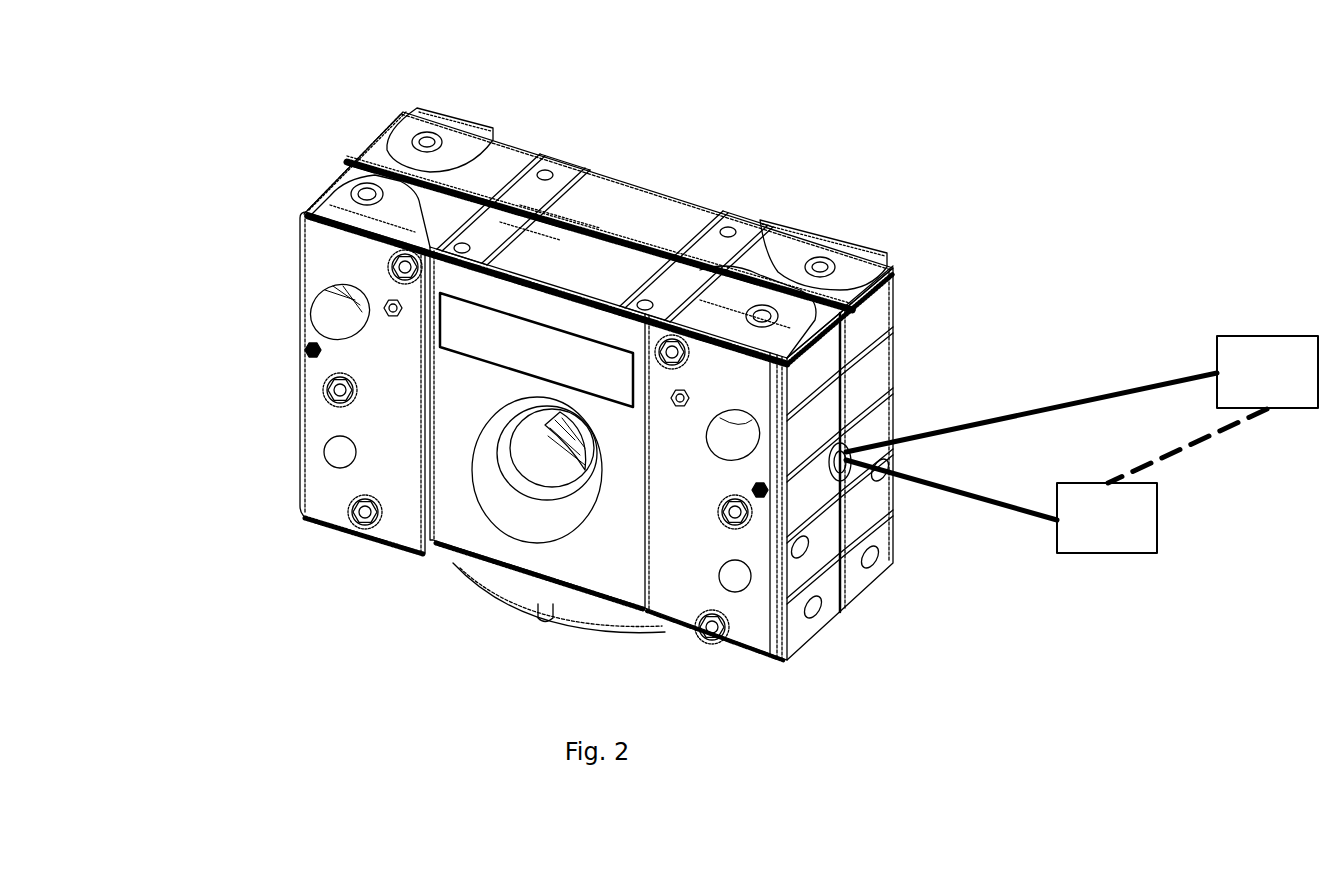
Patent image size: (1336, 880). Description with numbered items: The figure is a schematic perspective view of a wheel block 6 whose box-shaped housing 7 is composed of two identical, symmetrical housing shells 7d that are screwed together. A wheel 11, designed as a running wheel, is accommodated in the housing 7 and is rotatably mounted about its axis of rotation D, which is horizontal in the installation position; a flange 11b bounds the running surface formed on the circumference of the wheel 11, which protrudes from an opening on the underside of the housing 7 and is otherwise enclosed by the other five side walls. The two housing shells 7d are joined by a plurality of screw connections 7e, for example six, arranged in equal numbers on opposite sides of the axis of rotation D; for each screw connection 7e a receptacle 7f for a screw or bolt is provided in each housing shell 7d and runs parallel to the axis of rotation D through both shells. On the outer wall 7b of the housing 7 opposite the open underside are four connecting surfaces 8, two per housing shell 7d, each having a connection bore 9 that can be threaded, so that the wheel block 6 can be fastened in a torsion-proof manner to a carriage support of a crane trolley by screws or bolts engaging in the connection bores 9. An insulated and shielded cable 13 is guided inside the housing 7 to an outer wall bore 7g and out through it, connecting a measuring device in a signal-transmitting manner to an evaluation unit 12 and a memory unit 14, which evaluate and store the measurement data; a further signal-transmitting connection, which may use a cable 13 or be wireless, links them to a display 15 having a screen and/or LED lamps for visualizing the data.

The wheel block 6 is at (777, 140).
The housing 7 is at (598, 224).
The outer wall 7b is at (567, 197).
The housing shell 7d is at (594, 253).
The screw connection 7e is at (577, 442).
The receptacle 7f is at (394, 259).
The outer wall bore 7g is at (846, 474).
The connecting surface 8 is at (398, 196).
The connection bore 9 is at (427, 143).
The wheel 11 is at (457, 621).
The flange 11b is at (540, 628).
The evaluation unit 12 is at (1267, 372).
The cable 13 is at (1008, 492).
The memory unit 14 is at (1107, 518).
The display 15 is at (598, 377).
The axis of rotation D is at (565, 445).